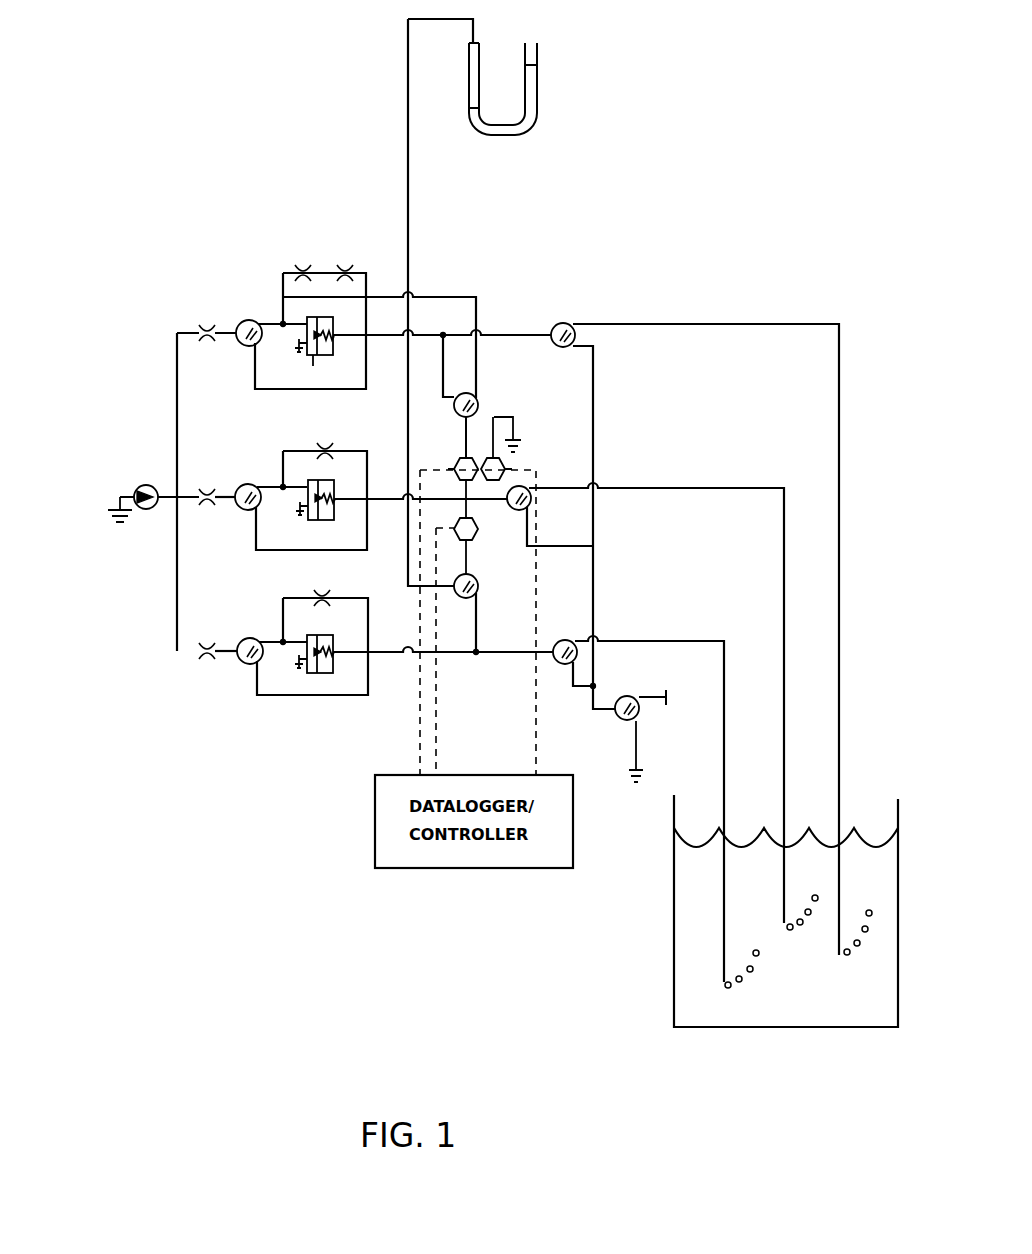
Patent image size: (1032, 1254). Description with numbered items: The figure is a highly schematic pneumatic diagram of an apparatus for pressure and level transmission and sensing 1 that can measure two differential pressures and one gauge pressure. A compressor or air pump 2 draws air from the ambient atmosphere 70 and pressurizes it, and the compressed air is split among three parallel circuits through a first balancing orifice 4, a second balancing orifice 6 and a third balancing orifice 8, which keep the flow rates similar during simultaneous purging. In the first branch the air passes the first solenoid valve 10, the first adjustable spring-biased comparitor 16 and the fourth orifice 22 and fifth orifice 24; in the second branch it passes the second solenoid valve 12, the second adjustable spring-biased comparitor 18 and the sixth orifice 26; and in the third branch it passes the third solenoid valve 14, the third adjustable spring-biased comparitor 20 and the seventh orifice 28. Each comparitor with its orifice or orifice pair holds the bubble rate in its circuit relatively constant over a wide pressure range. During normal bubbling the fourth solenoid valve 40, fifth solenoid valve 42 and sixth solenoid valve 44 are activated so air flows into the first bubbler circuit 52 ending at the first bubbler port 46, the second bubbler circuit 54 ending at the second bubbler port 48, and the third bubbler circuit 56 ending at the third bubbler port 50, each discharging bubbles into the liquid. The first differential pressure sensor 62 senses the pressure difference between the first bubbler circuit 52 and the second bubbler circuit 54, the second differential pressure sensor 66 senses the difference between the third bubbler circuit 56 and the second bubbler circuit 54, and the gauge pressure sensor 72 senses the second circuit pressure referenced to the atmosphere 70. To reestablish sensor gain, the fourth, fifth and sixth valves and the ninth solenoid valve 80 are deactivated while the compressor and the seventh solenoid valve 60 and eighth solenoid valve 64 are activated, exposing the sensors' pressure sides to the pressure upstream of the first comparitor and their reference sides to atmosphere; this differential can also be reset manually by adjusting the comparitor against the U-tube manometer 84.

The apparatus for pressure and level transmission and sensing 1 is at (166, 345).
The compressor or air pump 2 is at (137, 485).
The first balancing orifice 4 is at (204, 324).
The second balancing orifice 6 is at (204, 488).
The third balancing orifice 8 is at (204, 642).
The first solenoid valve 10 is at (243, 321).
The second solenoid valve 12 is at (243, 485).
The third solenoid valve 14 is at (243, 640).
The first adjustable spring-biased comparitor 16 is at (313, 366).
The second adjustable spring-biased comparitor 18 is at (324, 520).
The third adjustable spring-biased comparitor 20 is at (320, 673).
The fourth orifice 22 is at (302, 266).
The fifth orifice 24 is at (346, 266).
The sixth orifice 26 is at (326, 442).
The seventh orifice 28 is at (322, 590).
The fourth solenoid valve 40 is at (560, 322).
The fifth solenoid valve 42 is at (532, 500).
The sixth solenoid valve 44 is at (565, 640).
The first bubbler port 46 is at (841, 957).
The second bubbler port 48 is at (786, 925).
The third bubbler port 50 is at (724, 982).
The first bubbler circuit 52 is at (735, 322).
The second bubbler circuit 54 is at (730, 484).
The third bubbler circuit 56 is at (705, 640).
The seventh solenoid valve 60 is at (478, 403).
The first differential pressure sensor 62 is at (454, 465).
The eighth solenoid valve 64 is at (477, 592).
The second differential pressure sensor 66 is at (477, 535).
The atmosphere 70 is at (115, 525).
The gauge pressure sensor 72 is at (512, 462).
The ninth solenoid valve 80 is at (618, 700).
The U-tube manometer 84 is at (540, 100).